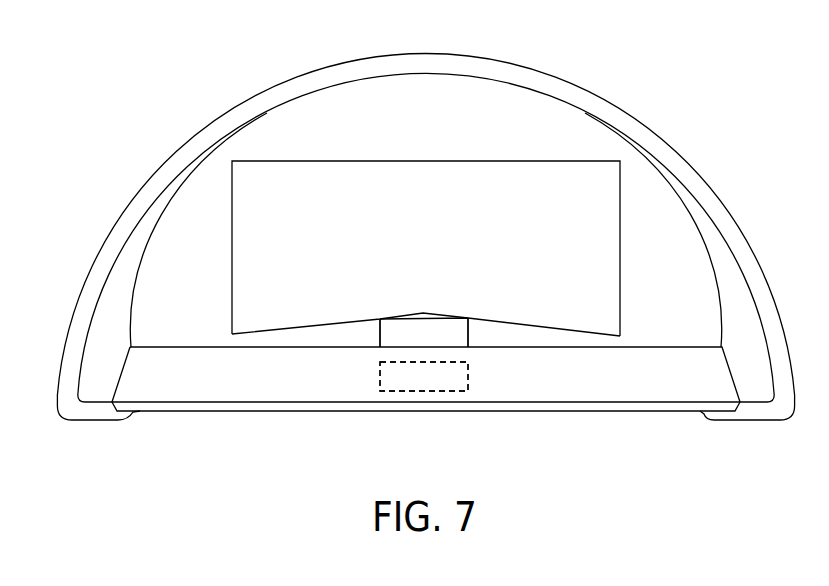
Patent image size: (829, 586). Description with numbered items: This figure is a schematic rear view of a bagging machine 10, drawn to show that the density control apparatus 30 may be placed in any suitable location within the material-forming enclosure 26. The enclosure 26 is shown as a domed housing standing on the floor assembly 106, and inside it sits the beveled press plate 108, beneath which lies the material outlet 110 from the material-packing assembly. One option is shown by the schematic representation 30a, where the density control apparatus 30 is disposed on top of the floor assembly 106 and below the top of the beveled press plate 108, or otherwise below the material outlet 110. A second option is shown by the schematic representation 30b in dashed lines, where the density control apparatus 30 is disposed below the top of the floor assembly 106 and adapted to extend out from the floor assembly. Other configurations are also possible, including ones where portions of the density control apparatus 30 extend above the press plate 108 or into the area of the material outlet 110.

The bagging machine 10 is at (703, 97).
The material-forming enclosure 26 is at (697, 165).
The floor assembly 106 is at (650, 388).
The beveled press plate 108 is at (508, 336).
The material outlet 110 is at (600, 265).
The density control apparatus 30 is at (378, 333).
The schematic representation of density control apparatus 30a is at (458, 337).
The schematic representation of density control apparatus in dashed lines 30b is at (448, 376).